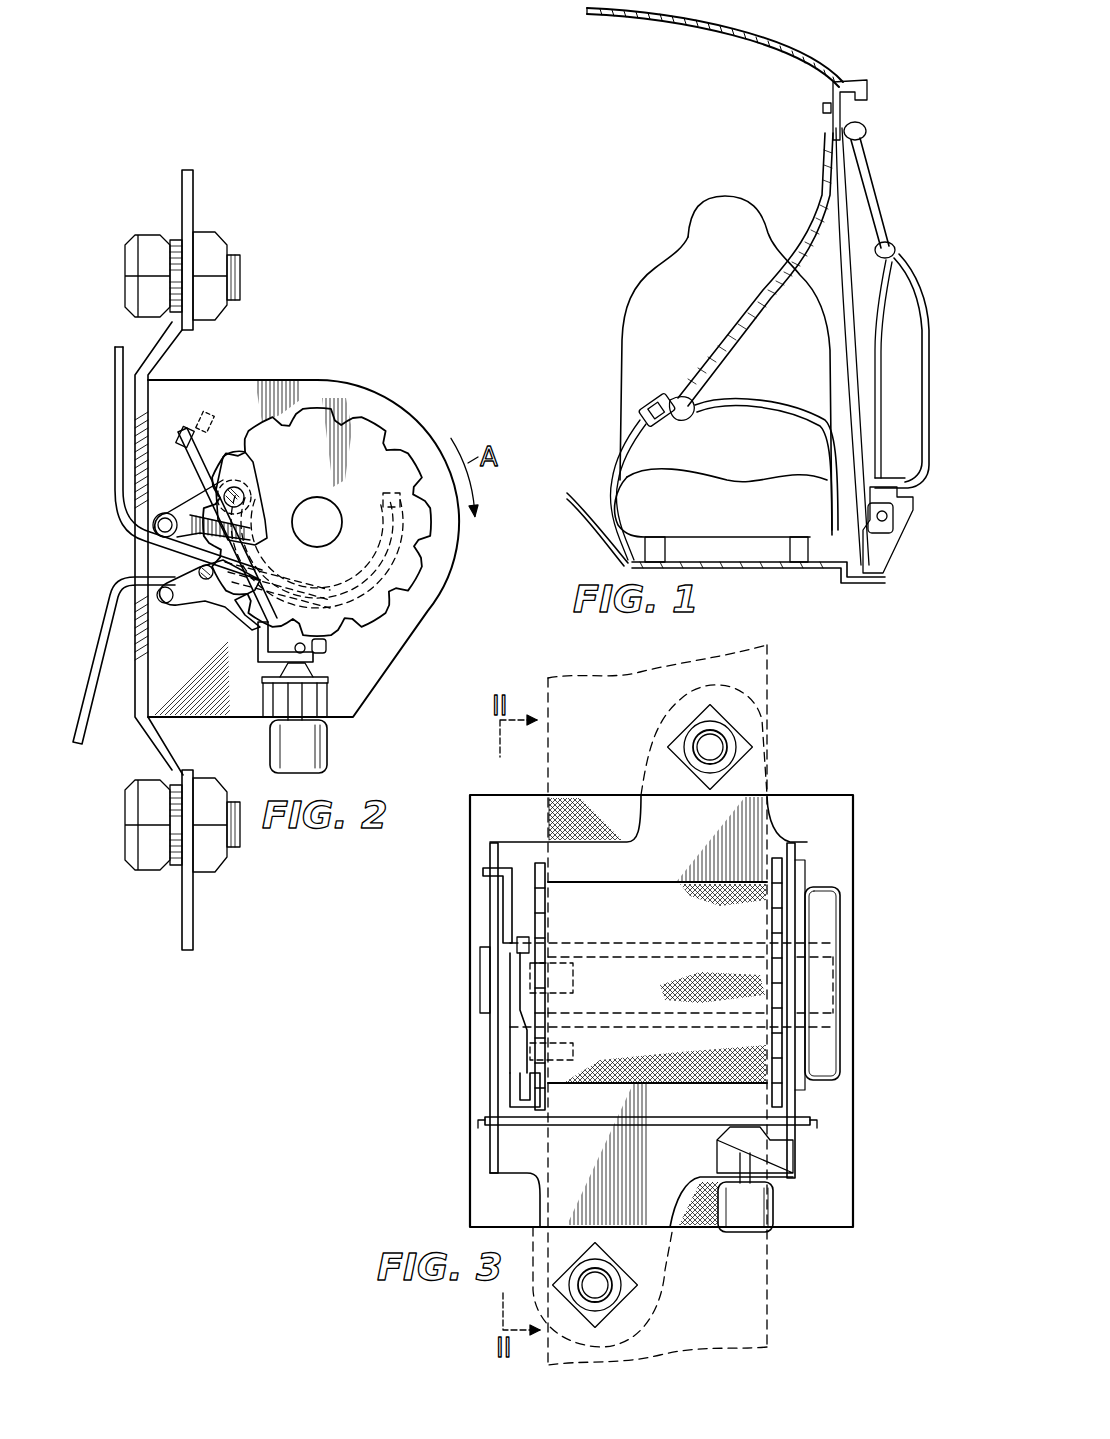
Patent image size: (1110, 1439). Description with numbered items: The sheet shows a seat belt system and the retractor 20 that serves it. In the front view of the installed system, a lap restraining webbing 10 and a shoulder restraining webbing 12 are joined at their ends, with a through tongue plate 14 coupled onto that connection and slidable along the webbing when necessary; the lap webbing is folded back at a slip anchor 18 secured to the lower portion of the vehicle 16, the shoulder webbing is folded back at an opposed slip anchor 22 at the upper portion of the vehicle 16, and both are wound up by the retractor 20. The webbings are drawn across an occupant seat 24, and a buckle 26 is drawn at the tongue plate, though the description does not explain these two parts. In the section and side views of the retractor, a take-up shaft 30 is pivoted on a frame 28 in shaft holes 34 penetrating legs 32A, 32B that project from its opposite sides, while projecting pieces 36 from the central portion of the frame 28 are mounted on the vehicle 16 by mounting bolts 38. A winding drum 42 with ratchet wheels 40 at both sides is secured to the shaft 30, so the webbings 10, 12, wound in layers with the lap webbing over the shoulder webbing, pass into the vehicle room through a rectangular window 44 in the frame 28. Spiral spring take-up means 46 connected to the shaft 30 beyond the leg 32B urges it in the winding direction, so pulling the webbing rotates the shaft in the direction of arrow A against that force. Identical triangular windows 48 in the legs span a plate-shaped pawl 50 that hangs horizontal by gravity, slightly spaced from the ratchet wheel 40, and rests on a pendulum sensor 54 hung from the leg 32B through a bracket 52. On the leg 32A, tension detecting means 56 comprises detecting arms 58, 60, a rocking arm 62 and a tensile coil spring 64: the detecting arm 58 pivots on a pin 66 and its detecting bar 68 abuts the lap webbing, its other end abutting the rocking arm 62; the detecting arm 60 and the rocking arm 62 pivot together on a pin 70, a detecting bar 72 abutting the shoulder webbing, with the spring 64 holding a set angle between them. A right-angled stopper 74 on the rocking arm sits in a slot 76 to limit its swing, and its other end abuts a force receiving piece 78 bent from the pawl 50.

In FIG. 1, the lap restraining webbing 10 is at (774, 402).
In FIG. 2, the lap restraining webbing 10 is at (94, 658).
In FIG. 3, the lap restraining webbing 10 is at (772, 1287).
In FIG. 1, the shoulder restraining webbing 12 is at (757, 311).
In FIG. 2, the shoulder restraining webbing 12 is at (113, 418).
In FIG. 3, the shoulder restraining webbing 12 is at (547, 813).
In FIG. 1, the through tongue plate 14 is at (688, 422).
In FIG. 1, the vehicle 16 is at (796, 46).
In FIG. 2, the vehicle 16 is at (194, 197).
In FIG. 3, the vehicle 16 is at (838, 805).
In FIG. 1, the slip anchor 18 is at (848, 566).
In FIG. 1, the retractor 20 is at (905, 510).
In FIG. 2, the retractor 20 is at (442, 373).
In FIG. 3, the retractor 20 is at (884, 805).
In FIG. 1, the slip anchor 22 is at (828, 117).
In FIG. 1, the seat 24 is at (657, 277).
In FIG. 1, the buckle 26 is at (660, 410).
In FIG. 1, the frame 28 is at (897, 530).
In FIG. 2, the frame 28 is at (136, 708).
In FIG. 3, the frame 28 is at (664, 1218).
In FIG. 2, the take-up shaft 30 is at (327, 497).
In FIG. 3, the take-up shaft 30 is at (705, 952).
In FIG. 3, the leg 32A is at (490, 855).
In FIG. 2, the leg 32B is at (338, 380).
In FIG. 3, the leg 32B is at (795, 855).
In FIG. 3, the shaft hole 34 is at (797, 963).
In FIG. 2, the projecting piece 36 is at (176, 342).
In FIG. 3, the projecting piece 36 is at (650, 735).
In FIG. 2, the mounting bolt 38 is at (125, 285).
In FIG. 3, the mounting bolt 38 is at (699, 762).
In FIG. 2, the ratchet wheel 40 is at (420, 609).
In FIG. 3, the ratchet wheel 40 is at (545, 1097).
In FIG. 3, the winding drum 42 is at (643, 937).
In FIG. 2, the rectangular window 44 is at (133, 553).
In FIG. 3, the spiral spring take-up means 46 is at (840, 1027).
In FIG. 2, the triangular window 48 is at (326, 653).
In FIG. 2, the pawl 50 is at (299, 644).
In FIG. 3, the pawl 50 is at (650, 1114).
In FIG. 2, the bracket 52 is at (262, 697).
In FIG. 3, the bracket 52 is at (780, 1153).
In FIG. 2, the sensor 54 is at (328, 748).
In FIG. 3, the sensor 54 is at (776, 1205).
In FIG. 2, the tension detecting means 56 is at (252, 453).
In FIG. 3, the tension detecting means 56 is at (522, 883).
In FIG. 2, the detecting arm 58 is at (190, 608).
In FIG. 2, the detecting arm 60 is at (192, 493).
In FIG. 3, the detecting arm 60 is at (529, 943).
In FIG. 2, the rocking arm 62 is at (270, 557).
In FIG. 3, the rocking arm 62 is at (520, 902).
In FIG. 2, the tensile coil spring 64 is at (257, 517).
In FIG. 2, the pin 66 is at (205, 582).
In FIG. 2, the detecting bar 68 is at (177, 602).
In FIG. 3, the detecting bar 68 is at (530, 1040).
In FIG. 2, the pin 70 is at (246, 493).
In FIG. 2, the detecting bar 72 is at (167, 517).
In FIG. 3, the detecting bar 72 is at (530, 973).
In FIG. 2, the stopper 74 is at (177, 431).
In FIG. 2, the slot 76 is at (209, 420).
In FIG. 2, the force receiving piece 78 is at (257, 641).
In FIG. 3, the force receiving piece 78 is at (510, 1087).